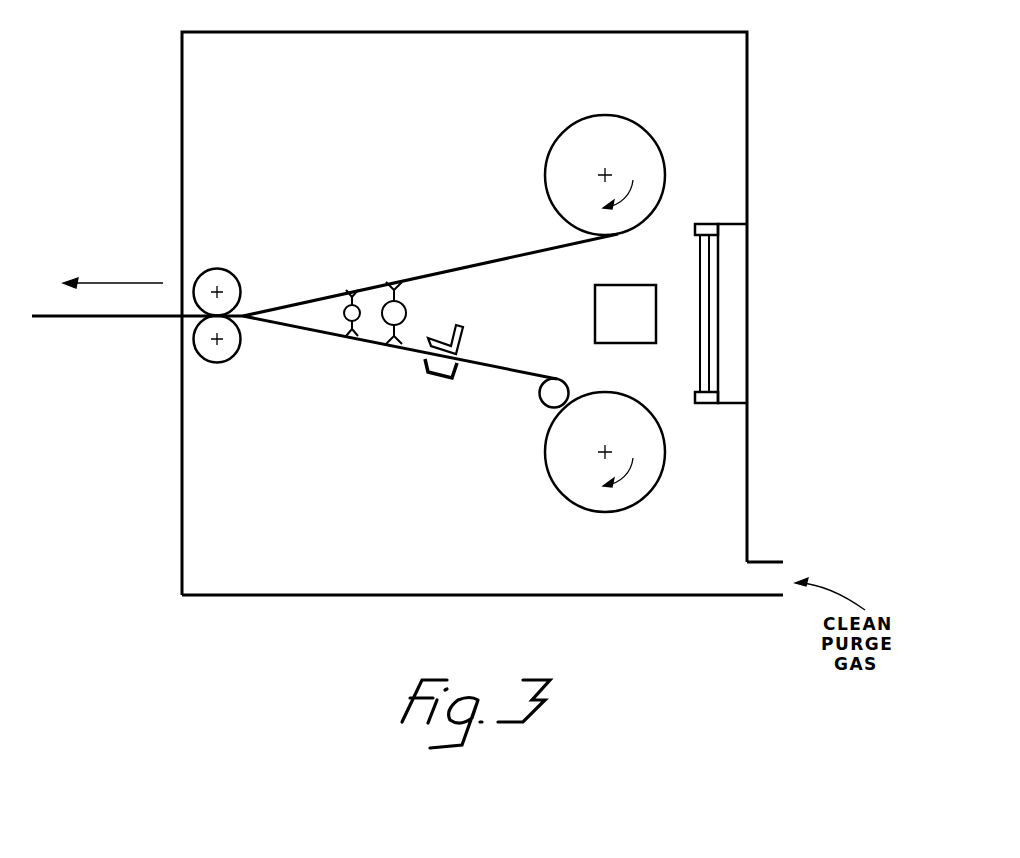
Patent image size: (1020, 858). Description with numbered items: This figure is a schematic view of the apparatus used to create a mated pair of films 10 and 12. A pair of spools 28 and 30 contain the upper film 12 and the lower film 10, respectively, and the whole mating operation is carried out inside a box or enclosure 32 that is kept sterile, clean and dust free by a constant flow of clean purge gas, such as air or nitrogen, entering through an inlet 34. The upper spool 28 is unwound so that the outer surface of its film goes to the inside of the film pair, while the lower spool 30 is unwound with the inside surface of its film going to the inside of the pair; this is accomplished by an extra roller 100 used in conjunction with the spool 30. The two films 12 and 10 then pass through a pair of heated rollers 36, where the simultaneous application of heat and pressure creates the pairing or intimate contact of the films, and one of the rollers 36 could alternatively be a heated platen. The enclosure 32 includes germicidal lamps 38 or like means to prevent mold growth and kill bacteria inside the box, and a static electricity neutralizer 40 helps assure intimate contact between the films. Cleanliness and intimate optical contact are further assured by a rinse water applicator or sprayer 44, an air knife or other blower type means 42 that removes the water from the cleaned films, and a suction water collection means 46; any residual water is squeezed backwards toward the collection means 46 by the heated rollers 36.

The lower film 10 is at (500, 370).
The upper film 12 is at (495, 257).
The spool 28 is at (642, 148).
The spool 30 is at (645, 478).
The enclosure 32 is at (253, 597).
The inlet 34 is at (778, 577).
The heated rollers 36 is at (227, 270).
The lamp 38 is at (705, 303).
The static electricity neutralizer 40 is at (617, 282).
The air knife 42 is at (345, 306).
The rinse water applicator 44 is at (408, 310).
The suction water collection means 46 is at (463, 332).
The extra roller 100 is at (550, 407).